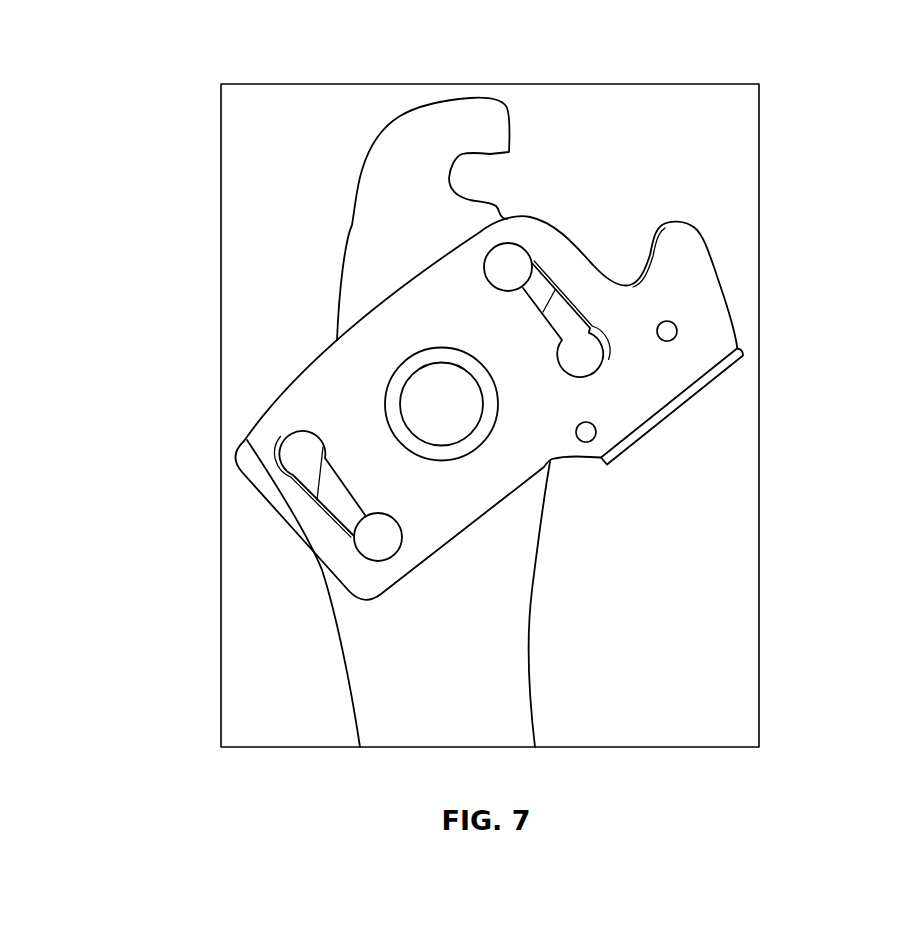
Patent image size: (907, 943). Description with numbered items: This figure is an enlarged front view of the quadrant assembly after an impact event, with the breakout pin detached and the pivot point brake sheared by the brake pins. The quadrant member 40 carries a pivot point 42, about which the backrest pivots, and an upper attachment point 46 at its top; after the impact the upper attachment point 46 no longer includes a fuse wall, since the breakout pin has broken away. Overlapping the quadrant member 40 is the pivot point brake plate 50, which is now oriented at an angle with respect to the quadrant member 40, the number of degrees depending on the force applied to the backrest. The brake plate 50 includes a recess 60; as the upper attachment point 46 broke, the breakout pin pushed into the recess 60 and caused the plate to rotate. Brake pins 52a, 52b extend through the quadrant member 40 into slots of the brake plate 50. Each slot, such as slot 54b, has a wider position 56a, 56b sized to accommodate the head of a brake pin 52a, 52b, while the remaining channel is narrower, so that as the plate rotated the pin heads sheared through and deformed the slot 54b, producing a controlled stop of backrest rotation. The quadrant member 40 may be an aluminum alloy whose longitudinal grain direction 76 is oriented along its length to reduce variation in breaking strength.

The quadrant member 40 is at (352, 393).
The pivot point 42 is at (450, 425).
The upper attachment point 46 is at (485, 178).
The pivot point brake plate 50 is at (471, 366).
The brake pin 52a is at (513, 261).
The brake pin 52b is at (363, 548).
The slot 54b is at (537, 283).
The position 56a is at (575, 365).
The position 56b is at (302, 447).
The recess 60 is at (623, 261).
The longitudinal grain direction 76 is at (378, 707).